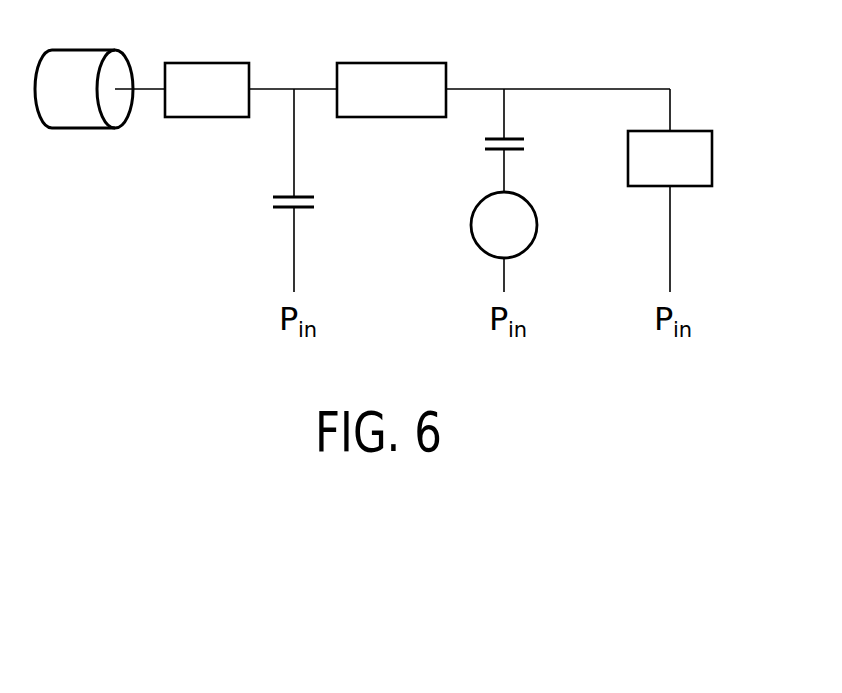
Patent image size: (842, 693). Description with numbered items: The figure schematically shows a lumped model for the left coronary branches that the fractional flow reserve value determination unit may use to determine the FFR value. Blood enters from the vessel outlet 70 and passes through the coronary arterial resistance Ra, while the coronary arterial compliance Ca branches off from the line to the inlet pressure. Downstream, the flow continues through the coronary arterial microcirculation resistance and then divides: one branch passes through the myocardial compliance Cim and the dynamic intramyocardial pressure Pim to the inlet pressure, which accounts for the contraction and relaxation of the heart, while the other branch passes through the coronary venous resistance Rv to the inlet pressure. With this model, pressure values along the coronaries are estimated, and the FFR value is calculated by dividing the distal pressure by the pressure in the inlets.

The vessel outlet 70 is at (68, 128).
The coronary arterial resistance Ra is at (207, 90).
The coronary arterial compliance Ca is at (267, 200).
The myocardial compliance Cim is at (475, 142).
The dynamic intramyocardial pressure Pim is at (504, 225).
The coronary venous resistance Rv is at (670, 158).